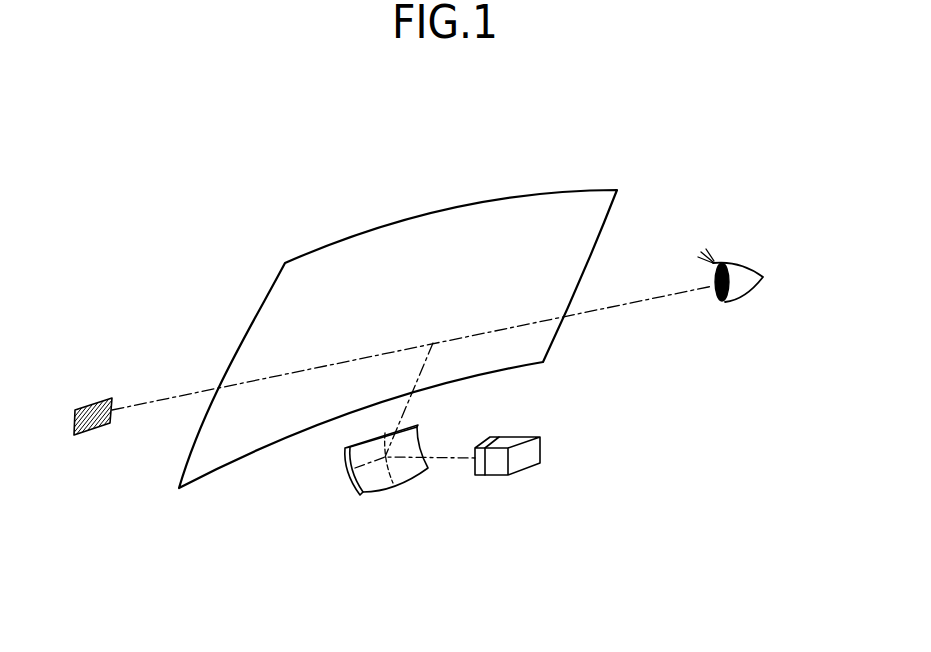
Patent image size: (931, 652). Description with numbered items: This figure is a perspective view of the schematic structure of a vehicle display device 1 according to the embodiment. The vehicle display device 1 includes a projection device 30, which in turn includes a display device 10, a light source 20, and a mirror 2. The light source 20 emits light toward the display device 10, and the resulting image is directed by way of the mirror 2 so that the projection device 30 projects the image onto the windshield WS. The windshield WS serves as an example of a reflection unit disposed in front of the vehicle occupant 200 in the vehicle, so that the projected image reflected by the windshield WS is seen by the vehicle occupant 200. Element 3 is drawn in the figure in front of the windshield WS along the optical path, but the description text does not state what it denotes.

The vehicle display device 1 is at (256, 136).
The windshield WS is at (518, 193).
The vehicle occupant 200 is at (743, 240).
The virtual image 3 is at (100, 398).
The projection device 30 is at (427, 517).
The mirror 2 is at (343, 487).
The display device 10 is at (483, 466).
The light source 20 is at (532, 449).